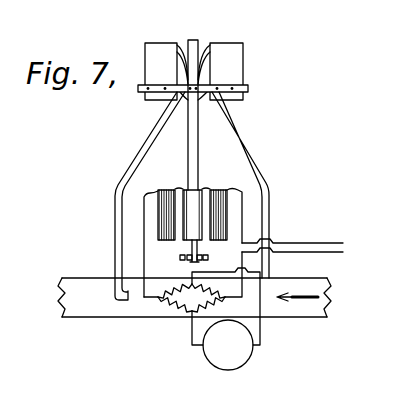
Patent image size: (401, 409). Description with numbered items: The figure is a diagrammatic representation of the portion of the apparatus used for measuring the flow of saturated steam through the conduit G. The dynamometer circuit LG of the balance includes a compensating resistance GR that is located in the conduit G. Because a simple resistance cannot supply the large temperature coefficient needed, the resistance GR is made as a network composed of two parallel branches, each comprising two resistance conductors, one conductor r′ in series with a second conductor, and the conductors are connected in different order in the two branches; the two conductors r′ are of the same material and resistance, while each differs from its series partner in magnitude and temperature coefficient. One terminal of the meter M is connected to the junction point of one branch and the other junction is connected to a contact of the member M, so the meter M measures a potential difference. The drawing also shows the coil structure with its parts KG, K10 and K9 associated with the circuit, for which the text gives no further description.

The magnet frame and armature hood KG is at (192, 170).
The electromagnet coils K10 is at (173, 188).
The coil frame K9 is at (216, 245).
The dynamometer circuit LG is at (322, 247).
The conduit G is at (90, 302).
The compensating resistance GR is at (158, 300).
The resistance conductor r′ is at (170, 288).
The meter M is at (228, 345).